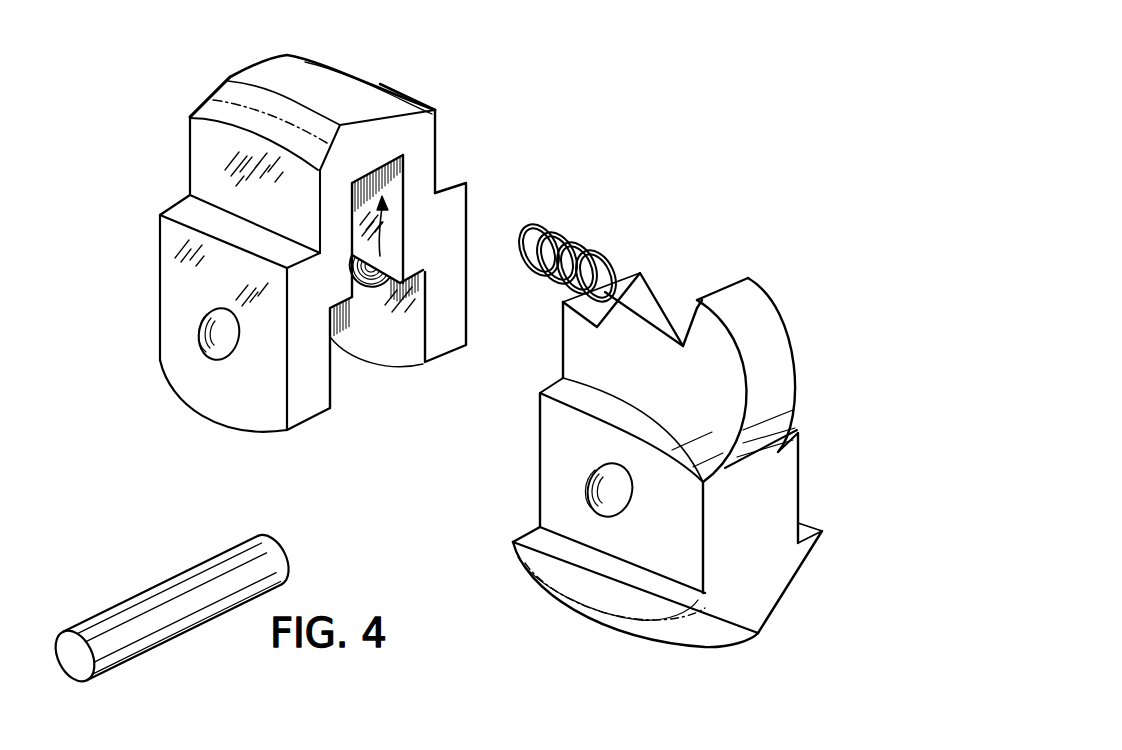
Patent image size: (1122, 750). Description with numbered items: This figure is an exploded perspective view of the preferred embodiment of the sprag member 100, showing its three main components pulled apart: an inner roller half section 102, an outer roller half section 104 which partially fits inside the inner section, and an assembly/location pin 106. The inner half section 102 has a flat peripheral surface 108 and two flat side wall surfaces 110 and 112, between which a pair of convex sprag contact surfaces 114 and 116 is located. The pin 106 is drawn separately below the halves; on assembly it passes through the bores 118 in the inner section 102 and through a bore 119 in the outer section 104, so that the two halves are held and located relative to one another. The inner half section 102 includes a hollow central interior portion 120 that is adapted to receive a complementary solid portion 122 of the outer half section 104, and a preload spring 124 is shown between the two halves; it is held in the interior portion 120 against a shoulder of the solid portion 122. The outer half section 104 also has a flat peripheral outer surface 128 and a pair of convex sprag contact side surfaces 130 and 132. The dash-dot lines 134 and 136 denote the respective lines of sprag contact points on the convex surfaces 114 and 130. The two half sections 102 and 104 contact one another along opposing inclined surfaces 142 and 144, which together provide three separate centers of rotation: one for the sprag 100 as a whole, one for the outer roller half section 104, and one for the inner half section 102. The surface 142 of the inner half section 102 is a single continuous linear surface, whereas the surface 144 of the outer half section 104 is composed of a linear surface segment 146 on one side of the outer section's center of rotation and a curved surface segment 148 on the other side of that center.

The sprag member 100 is at (569, 78).
The inner roller half section 102 is at (273, 72).
The outer roller half section 104 is at (762, 318).
The assembly/location pin 106 is at (180, 570).
The flat peripheral surface 108 is at (338, 85).
The flat side wall surface 110 is at (200, 167).
The flat side wall surface 112 is at (440, 148).
The convex sprag contact surface 114 is at (273, 98).
The convex sprag contact surface 116 is at (410, 88).
The bores 118 is at (198, 320).
The bore 119 is at (597, 508).
The hollow central interior portion 120 is at (404, 276).
The solid portion 122 is at (627, 333).
The preload spring 124 is at (562, 225).
The flat peripheral outer surface 128 is at (717, 640).
The convex sprag contact side surface 130 is at (632, 625).
The convex sprag contact side surface 132 is at (817, 553).
The line of sprag contact points 134 is at (220, 100).
The line of sprag contact points 136 is at (592, 610).
The inclined surface 142 is at (397, 267).
The inclined surface 144 is at (545, 473).
The linear surface segment 146 is at (575, 395).
The curved surface segment 148 is at (680, 437).